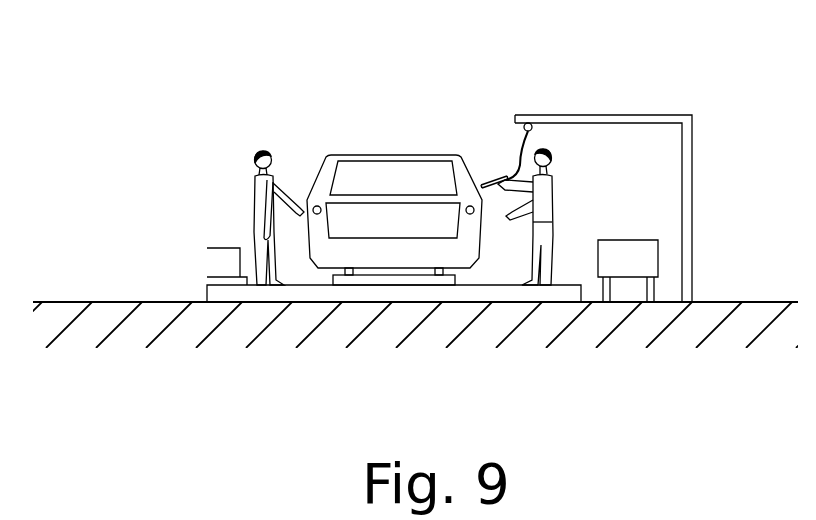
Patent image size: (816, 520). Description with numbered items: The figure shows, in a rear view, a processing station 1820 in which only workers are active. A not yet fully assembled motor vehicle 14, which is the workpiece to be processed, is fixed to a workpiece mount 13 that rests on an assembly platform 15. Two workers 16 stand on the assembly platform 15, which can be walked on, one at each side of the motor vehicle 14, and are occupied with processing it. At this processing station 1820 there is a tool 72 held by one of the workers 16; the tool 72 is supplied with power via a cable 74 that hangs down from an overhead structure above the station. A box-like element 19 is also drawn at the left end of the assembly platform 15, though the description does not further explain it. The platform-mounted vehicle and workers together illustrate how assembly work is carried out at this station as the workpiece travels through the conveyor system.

The processing station 1820 is at (311, 121).
The motor vehicle 14 is at (385, 154).
The workpiece mount 13 is at (455, 271).
The assembly platform 15 is at (553, 287).
The workers 16 is at (256, 175).
The control box 19 is at (224, 257).
The tool 72 is at (488, 177).
The cable 74 is at (533, 130).